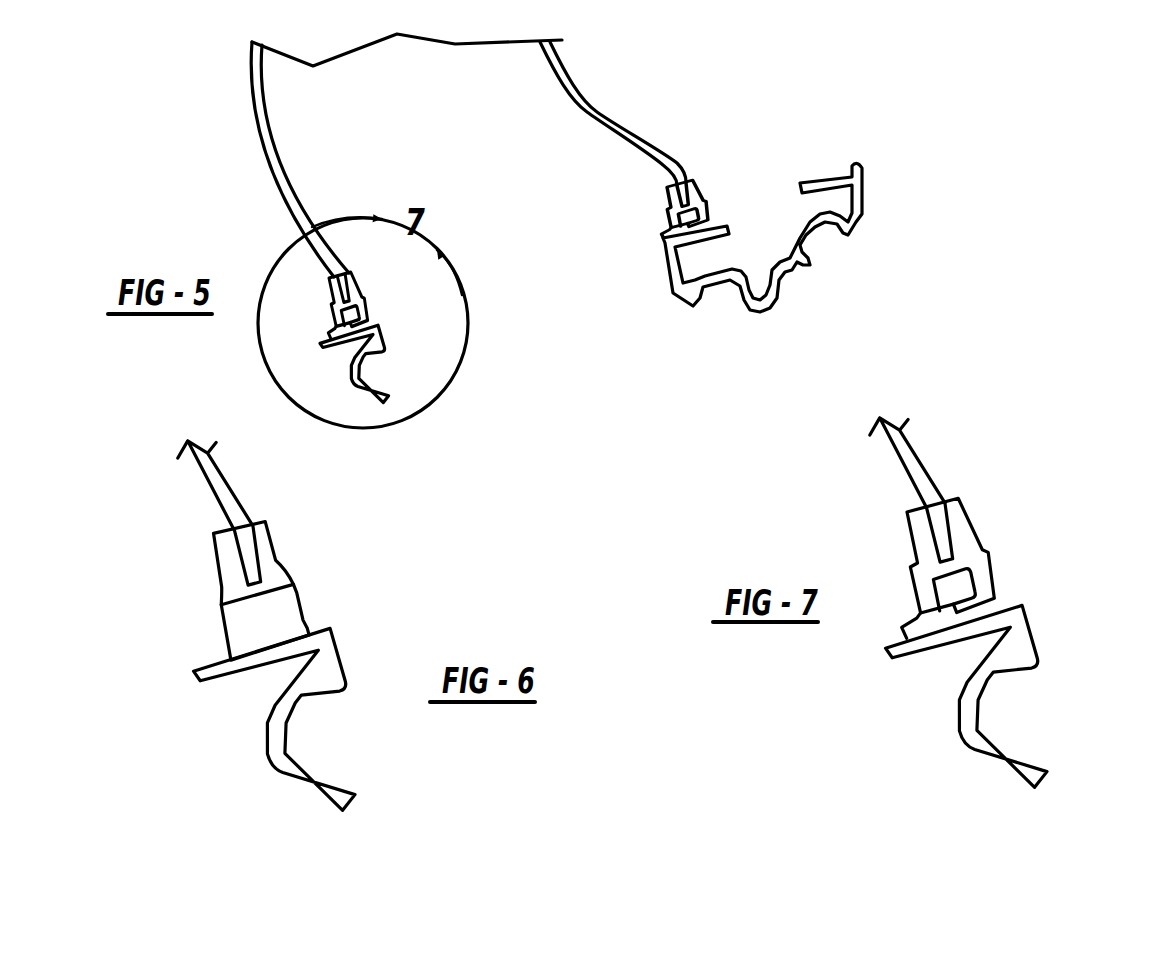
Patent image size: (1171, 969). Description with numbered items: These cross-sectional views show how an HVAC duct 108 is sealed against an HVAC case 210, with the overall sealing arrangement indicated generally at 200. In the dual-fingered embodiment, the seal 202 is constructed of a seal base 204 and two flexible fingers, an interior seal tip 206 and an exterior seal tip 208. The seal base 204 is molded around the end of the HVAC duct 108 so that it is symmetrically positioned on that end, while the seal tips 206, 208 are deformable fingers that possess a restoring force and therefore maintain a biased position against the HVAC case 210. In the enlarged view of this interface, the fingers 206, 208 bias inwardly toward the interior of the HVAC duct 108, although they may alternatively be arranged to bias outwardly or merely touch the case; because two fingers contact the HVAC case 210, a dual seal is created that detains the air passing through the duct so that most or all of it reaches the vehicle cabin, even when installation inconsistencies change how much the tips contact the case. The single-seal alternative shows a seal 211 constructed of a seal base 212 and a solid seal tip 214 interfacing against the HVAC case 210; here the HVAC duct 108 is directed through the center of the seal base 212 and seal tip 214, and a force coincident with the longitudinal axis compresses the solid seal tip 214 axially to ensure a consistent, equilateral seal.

In FIG. 5, the HVAC duct 108 is at (253, 102).
In FIG. 6, the HVAC duct 108 is at (205, 475).
In FIG. 7, the HVAC duct 108 is at (922, 455).
In FIG. 5, the fastening assembly 200 is at (823, 47).
In FIG. 5, the seal 202 is at (710, 190).
In FIG. 7, the seal 202 is at (1003, 543).
In FIG. 5, the seal base 204 is at (693, 178).
In FIG. 7, the seal base 204 is at (965, 513).
In FIG. 5, the interior seal tip 206 is at (670, 220).
In FIG. 7, the interior seal tip 206 is at (917, 597).
In FIG. 5, the exterior seal tip 208 is at (700, 223).
In FIG. 7, the exterior seal tip 208 is at (995, 588).
In FIG. 5, the HVAC case 210 is at (863, 193).
In FIG. 6, the HVAC case 210 is at (332, 630).
In FIG. 7, the HVAC case 210 is at (1030, 625).
In FIG. 6, the seal 211 is at (320, 575).
In FIG. 6, the seal base 212 is at (217, 557).
In FIG. 6, the solid seal tip 214 is at (223, 633).